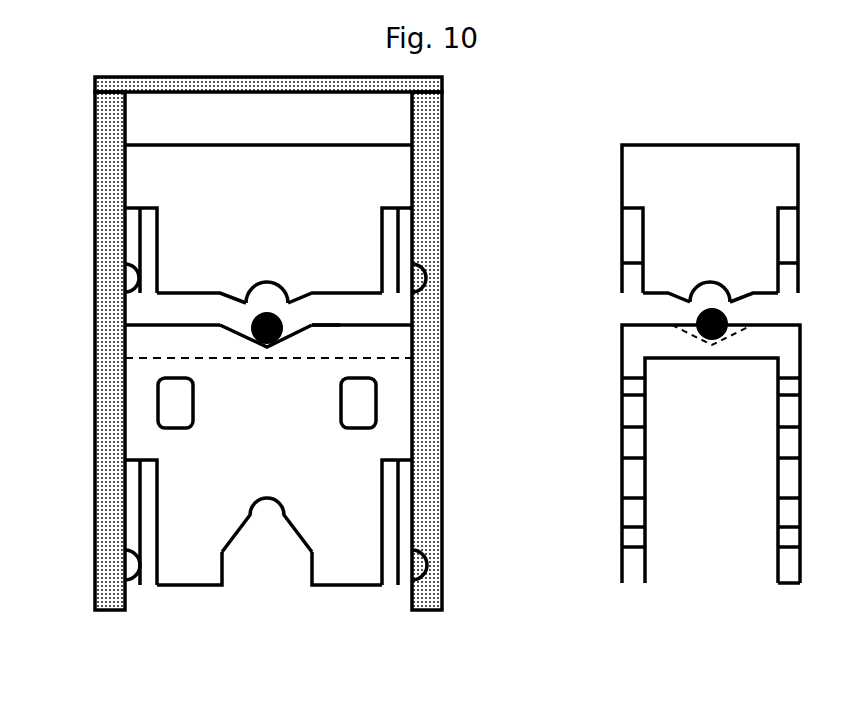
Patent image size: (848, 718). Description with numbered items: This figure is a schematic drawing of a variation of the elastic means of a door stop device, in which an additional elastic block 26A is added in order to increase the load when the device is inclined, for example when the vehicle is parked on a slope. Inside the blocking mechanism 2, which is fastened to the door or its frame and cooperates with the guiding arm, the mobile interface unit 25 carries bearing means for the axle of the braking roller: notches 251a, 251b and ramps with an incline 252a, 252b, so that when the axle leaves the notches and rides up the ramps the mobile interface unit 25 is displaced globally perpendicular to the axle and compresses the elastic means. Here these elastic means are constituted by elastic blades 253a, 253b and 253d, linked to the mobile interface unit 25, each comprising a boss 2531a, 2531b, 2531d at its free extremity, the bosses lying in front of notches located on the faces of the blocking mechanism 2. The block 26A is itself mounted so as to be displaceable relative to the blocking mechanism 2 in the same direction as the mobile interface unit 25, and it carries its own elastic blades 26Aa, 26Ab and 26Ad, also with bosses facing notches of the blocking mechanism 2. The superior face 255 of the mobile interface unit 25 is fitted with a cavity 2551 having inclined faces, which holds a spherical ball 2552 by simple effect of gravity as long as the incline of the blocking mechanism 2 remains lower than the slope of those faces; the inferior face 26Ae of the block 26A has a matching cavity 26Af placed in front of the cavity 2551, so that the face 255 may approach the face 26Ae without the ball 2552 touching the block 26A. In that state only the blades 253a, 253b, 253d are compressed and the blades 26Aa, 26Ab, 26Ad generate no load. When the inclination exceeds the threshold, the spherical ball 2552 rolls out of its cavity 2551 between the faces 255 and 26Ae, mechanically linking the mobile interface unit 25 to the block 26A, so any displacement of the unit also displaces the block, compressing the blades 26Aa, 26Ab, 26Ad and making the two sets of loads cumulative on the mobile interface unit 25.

The blocking mechanism 2 is at (105, 116).
The block 26A is at (288, 169).
The elastic means 26Aa is at (135, 243).
The elastic means 26Ab is at (632, 243).
The elastic means 26Ad is at (787, 243).
The face of block 26Ae is at (333, 292).
The cavity 26Af is at (273, 283).
The mobile interface unit 25 is at (768, 338).
The notch 251a is at (632, 517).
The notch 251b is at (787, 517).
The ramp with an incline 252a is at (237, 548).
The ramp with an incline 252b is at (300, 548).
The elastic blade 253a is at (133, 523).
The elastic blade 253b is at (633, 537).
The elastic blade 253d is at (795, 534).
The boss 2531a is at (108, 612).
The boss 2531b is at (633, 572).
The boss 2531d is at (797, 568).
The superior face 255 is at (284, 315).
The cavity 2551 is at (302, 332).
The spherical ball 2552 is at (697, 318).